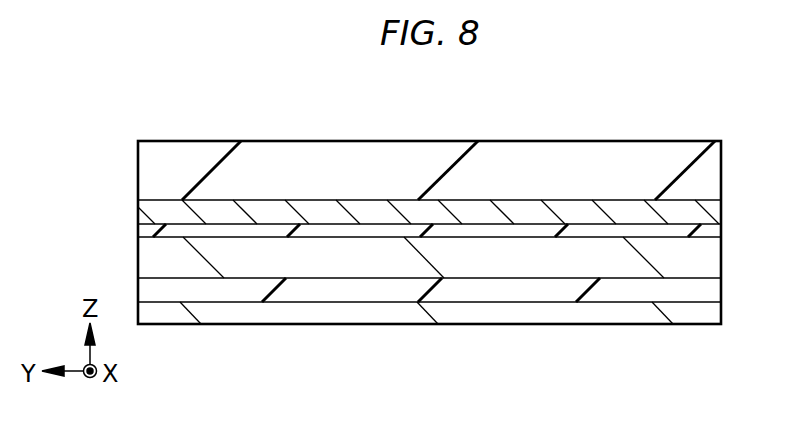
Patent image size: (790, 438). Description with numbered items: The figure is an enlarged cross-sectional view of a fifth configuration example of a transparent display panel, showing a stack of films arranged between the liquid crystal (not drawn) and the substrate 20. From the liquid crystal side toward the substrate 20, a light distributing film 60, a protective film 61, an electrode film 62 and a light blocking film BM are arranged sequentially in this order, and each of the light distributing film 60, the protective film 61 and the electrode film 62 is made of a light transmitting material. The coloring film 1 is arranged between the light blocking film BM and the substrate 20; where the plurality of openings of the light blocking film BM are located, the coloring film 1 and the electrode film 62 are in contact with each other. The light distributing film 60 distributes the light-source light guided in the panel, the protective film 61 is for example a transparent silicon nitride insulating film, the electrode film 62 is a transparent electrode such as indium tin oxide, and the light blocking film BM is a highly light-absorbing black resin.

The substrate 20 is at (582, 178).
The coloring film 1 is at (487, 215).
The light blocking film BM is at (398, 230).
The electrode film 62 is at (377, 257).
The protective film 61 is at (308, 290).
The light distributing film 60 is at (238, 313).